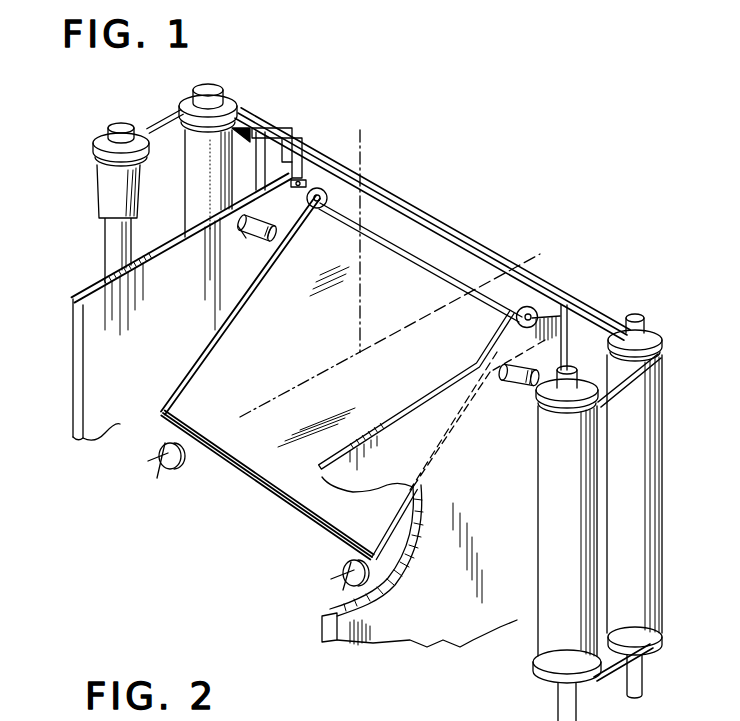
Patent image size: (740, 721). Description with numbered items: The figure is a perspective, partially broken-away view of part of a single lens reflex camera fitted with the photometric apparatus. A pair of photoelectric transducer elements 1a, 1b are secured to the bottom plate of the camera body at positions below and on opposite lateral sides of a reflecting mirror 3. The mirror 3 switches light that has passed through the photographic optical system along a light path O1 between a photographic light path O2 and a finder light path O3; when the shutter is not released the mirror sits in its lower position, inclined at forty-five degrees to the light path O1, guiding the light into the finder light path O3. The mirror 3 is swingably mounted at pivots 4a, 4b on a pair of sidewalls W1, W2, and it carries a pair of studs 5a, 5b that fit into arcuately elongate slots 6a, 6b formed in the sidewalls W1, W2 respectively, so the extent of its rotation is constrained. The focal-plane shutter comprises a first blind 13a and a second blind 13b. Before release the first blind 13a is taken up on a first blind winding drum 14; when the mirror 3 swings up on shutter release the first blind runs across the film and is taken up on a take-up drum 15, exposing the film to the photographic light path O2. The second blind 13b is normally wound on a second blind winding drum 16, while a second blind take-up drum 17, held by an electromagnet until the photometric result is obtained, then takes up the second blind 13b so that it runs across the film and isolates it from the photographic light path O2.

The photoelectric transducer element 1a is at (175, 470).
The photoelectric transducer element 1b is at (343, 560).
The reflecting mirror 3 is at (283, 483).
The pivot 4a is at (543, 306).
The pivot 4b is at (311, 180).
The stud 5a is at (508, 398).
The stud 5b is at (272, 232).
The arcuately elongate slot 6a is at (499, 435).
The arcuately elongate slot 6b is at (258, 231).
The first blind 13a is at (540, 300).
The second blind 13b is at (250, 128).
The first blind winding drum 14 is at (108, 232).
The take-up drum 15 is at (656, 445).
The second blind winding drum 16 is at (190, 150).
The second blind take-up drum 17 is at (547, 527).
The light path O1 is at (260, 407).
The photographic light path O2 is at (412, 322).
The finder light path O3 is at (365, 153).
The sidewall W1 is at (322, 626).
The sidewall W2 is at (92, 385).